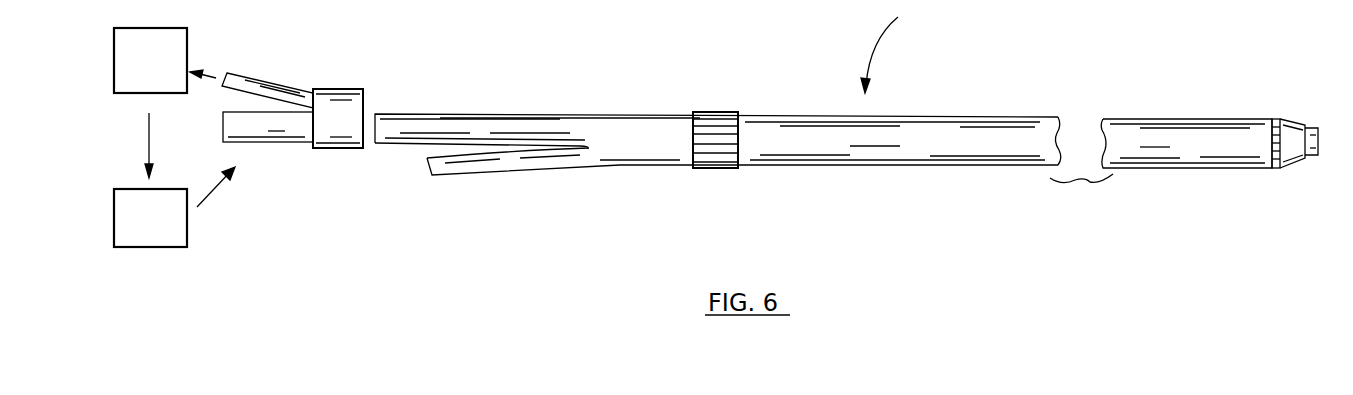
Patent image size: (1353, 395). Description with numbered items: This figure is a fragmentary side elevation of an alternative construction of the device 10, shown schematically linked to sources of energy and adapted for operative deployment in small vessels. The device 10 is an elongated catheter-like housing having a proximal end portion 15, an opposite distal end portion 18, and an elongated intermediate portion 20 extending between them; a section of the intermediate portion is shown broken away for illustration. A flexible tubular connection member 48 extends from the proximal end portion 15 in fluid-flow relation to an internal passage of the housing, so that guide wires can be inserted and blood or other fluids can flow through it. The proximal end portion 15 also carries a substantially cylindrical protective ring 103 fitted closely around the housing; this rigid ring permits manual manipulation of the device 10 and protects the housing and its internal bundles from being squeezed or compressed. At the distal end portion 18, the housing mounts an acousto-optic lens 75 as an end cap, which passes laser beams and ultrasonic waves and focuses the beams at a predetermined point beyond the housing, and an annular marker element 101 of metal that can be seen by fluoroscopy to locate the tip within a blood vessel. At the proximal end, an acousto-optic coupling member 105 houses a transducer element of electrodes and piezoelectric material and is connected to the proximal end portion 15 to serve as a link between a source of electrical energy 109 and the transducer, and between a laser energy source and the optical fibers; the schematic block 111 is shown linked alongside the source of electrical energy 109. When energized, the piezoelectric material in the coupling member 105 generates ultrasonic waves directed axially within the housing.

The device 10 is at (890, 49).
The proximal end portion 15 is at (470, 120).
The distal end portion 18 is at (1190, 122).
The intermediate portion 20 is at (1010, 120).
The tubular connection member 48 is at (495, 162).
The acousto-optic lens 75 is at (1318, 152).
The annular marker element 101 is at (1283, 122).
The protective ring 103 is at (715, 118).
The acousto-optic coupling member 105 is at (308, 128).
The source of electrical energy 109 is at (164, 72).
The receiver 111 is at (160, 230).